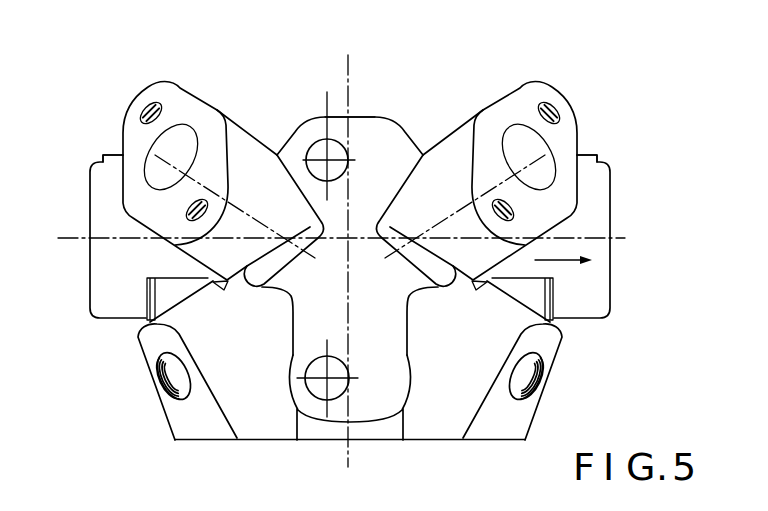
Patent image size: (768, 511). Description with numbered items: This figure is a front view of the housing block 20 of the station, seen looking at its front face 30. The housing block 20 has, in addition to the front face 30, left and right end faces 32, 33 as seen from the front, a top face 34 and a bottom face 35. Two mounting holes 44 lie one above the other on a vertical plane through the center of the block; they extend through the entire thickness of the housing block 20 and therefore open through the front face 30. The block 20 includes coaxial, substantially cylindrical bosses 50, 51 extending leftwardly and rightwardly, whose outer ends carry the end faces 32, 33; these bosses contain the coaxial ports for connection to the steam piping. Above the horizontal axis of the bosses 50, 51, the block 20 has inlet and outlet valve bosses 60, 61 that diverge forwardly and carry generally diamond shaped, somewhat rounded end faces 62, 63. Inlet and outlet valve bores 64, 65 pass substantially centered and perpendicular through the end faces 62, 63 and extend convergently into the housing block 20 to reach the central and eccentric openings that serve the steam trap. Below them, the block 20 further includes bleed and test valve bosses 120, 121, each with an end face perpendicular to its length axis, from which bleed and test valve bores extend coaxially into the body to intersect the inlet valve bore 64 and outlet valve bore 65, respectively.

The housing block 20 is at (120, 455).
The front face 30 is at (395, 132).
The left end face 32 is at (90, 168).
The right end face 33 is at (607, 305).
The top face 34 is at (363, 107).
The bottom face 35 is at (378, 441).
The mounting holes 44 is at (318, 146).
The leftwardly extending boss 50 is at (103, 153).
The rightwardly extending boss 51 is at (598, 157).
The inlet valve boss 60 is at (264, 192).
The outlet valve boss 61 is at (451, 192).
The end face of inlet valve boss 62 is at (180, 100).
The end face of outlet valve boss 63 is at (523, 95).
The inlet valve bore 64 is at (185, 140).
The outlet valve bore 65 is at (514, 143).
The bleed valve boss 120 is at (250, 343).
The test valve boss 121 is at (470, 347).